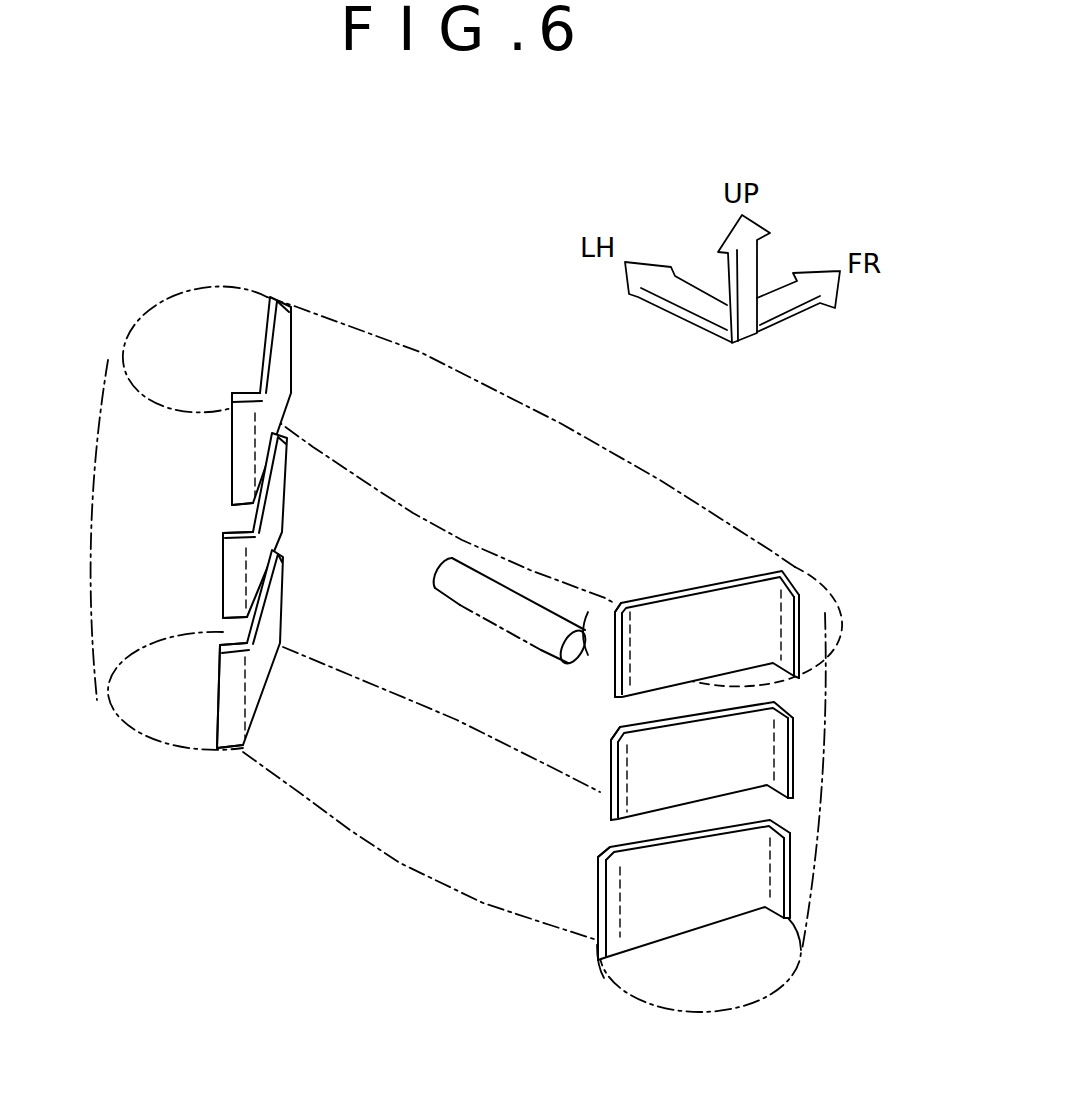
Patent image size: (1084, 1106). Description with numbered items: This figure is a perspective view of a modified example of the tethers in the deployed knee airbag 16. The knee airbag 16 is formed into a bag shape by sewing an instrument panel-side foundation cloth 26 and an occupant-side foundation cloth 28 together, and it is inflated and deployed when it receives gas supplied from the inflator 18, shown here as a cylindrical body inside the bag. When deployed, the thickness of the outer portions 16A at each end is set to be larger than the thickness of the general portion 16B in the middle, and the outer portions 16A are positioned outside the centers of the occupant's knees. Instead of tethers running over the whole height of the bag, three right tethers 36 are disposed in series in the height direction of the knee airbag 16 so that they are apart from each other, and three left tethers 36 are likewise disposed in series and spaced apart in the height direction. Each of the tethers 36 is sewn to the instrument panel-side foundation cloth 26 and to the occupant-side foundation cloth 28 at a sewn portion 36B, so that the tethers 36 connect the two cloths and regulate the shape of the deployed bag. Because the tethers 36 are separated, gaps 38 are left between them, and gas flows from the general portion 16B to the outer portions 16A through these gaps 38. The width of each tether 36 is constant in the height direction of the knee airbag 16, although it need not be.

The knee airbag 16 is at (662, 413).
The outer portions 16A is at (366, 324).
The general portion 16B is at (737, 526).
The inflator 18 is at (492, 623).
The instrument panel-side foundation cloth 26 is at (680, 473).
The occupant-side foundation cloth 28 is at (425, 837).
The tethers 36 is at (303, 394).
The sewn portion 36B is at (264, 319).
The gaps 38 is at (268, 470).